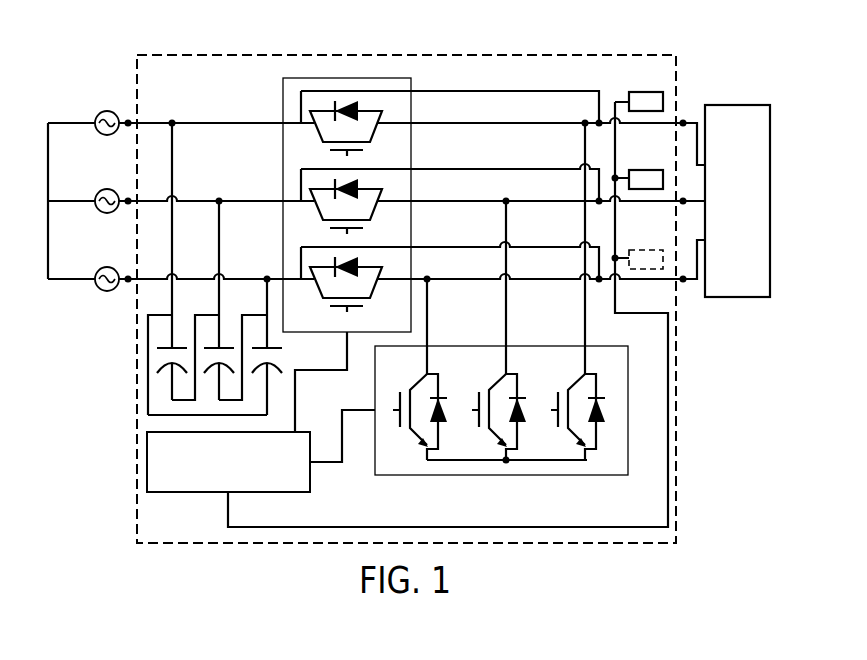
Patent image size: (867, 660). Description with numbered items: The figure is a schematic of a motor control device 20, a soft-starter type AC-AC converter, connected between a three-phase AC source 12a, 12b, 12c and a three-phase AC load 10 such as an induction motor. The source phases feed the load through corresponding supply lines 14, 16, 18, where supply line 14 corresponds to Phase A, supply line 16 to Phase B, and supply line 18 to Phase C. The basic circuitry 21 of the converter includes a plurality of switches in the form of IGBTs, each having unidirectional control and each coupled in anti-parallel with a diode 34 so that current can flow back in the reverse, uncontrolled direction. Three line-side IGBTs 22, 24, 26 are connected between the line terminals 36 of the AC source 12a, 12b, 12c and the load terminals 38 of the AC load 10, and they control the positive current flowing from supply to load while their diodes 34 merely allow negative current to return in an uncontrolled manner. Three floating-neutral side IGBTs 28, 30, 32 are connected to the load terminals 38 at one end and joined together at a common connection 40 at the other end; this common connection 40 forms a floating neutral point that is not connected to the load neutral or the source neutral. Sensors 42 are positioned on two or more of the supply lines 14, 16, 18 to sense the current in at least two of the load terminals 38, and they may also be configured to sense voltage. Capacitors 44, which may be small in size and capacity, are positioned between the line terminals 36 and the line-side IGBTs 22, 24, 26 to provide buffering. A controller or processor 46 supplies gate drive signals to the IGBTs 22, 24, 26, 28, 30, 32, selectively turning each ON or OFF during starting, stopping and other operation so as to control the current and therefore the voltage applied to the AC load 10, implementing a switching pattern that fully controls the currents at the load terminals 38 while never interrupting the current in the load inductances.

The AC load 10 is at (738, 105).
The AC source phase a 12a is at (97, 116).
The AC source phase b 12b is at (97, 194).
The AC source phase c 12c is at (97, 272).
The supply line 14 is at (530, 122).
The supply line 16 is at (530, 199).
The supply line 18 is at (530, 277).
The motor control device 20 is at (516, 40).
The circuitry 21 is at (226, 101).
The line-side IGBT 22 is at (322, 147).
The line-side IGBT 24 is at (322, 225).
The line-side IGBT 26 is at (326, 307).
The floating-neutral side IGBT 28 is at (560, 387).
The floating-neutral side IGBT 30 is at (482, 387).
The floating-neutral side IGBT 32 is at (402, 386).
The diode 34 is at (334, 110).
The line terminals 36 is at (128, 120).
The load terminals 38 is at (685, 121).
The common connection 40 is at (440, 462).
The sensors 42 is at (631, 90).
The capacitors 44 is at (160, 383).
The controller or processor 46 is at (190, 493).